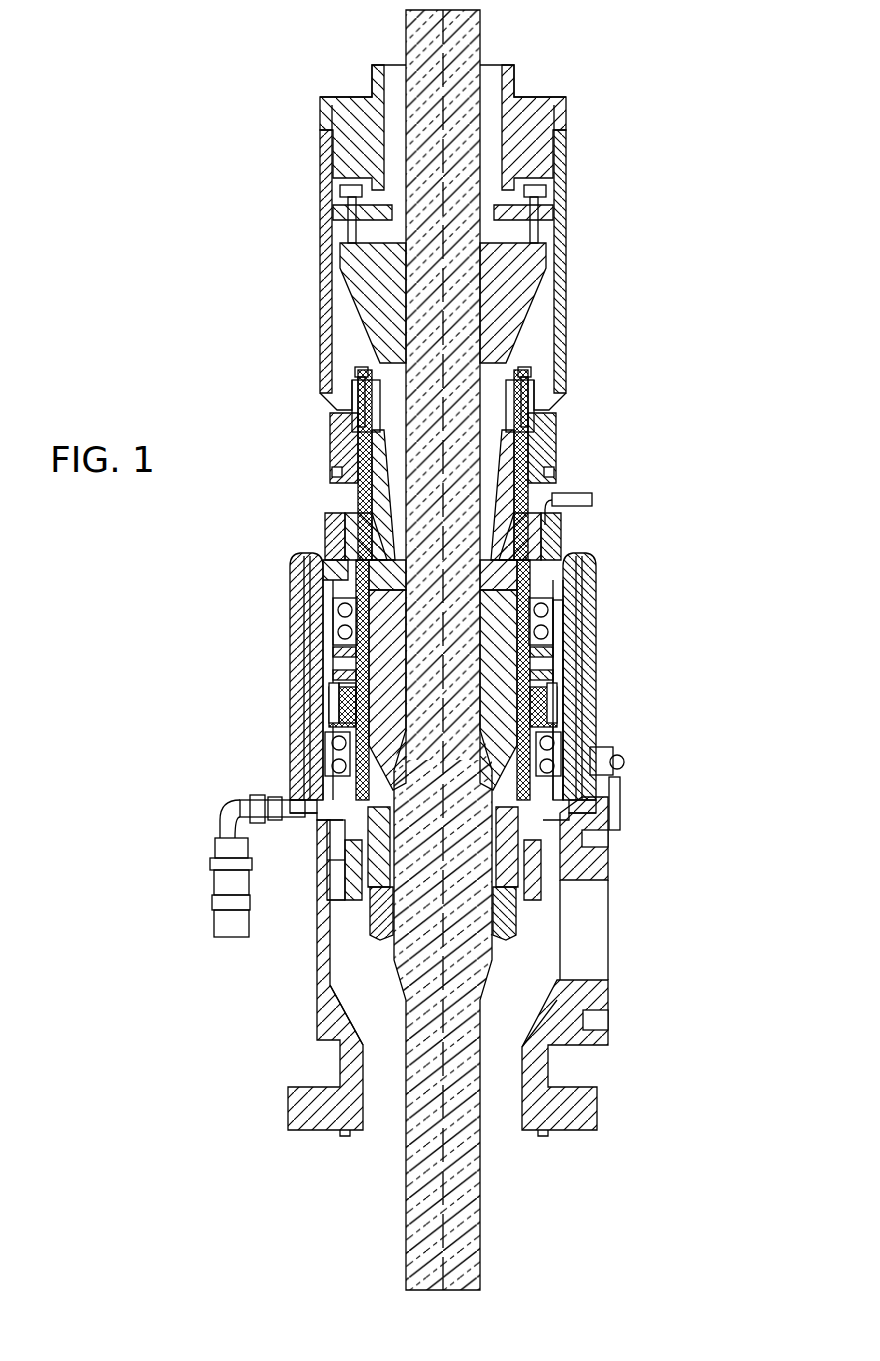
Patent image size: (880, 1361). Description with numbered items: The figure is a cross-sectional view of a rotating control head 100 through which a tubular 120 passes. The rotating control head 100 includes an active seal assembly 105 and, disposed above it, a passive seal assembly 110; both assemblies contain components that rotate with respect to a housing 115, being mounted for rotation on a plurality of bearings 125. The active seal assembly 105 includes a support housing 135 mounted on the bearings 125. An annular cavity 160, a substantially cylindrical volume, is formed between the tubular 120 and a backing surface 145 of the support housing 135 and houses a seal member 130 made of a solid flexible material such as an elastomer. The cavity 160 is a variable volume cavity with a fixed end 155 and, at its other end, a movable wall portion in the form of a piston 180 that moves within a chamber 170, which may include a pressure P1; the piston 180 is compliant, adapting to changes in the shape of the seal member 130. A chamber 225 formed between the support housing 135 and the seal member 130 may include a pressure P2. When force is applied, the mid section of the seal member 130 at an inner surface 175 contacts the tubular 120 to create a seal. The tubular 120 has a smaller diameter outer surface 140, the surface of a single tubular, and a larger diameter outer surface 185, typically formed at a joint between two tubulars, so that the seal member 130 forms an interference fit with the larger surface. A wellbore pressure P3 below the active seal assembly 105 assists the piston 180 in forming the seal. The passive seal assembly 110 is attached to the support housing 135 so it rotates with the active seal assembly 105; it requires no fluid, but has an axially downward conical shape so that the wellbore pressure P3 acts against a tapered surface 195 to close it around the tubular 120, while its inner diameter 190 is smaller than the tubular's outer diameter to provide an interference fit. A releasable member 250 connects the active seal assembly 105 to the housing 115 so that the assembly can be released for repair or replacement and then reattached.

The rotating control head 100 is at (718, 122).
The active seal assembly 105 is at (207, 629).
The passive seal assembly 110 is at (292, 228).
The housing 115 is at (585, 1113).
The tubular 120 is at (483, 22).
The plurality of bearings 125 is at (575, 612).
The seal member 130 is at (330, 668).
The support housing 135 is at (530, 690).
The smaller diameter outer surface 140 is at (481, 247).
The backing surface 145 is at (590, 727).
The fixed end 155 is at (322, 600).
The annular cavity 160 is at (330, 720).
The chamber 170 is at (345, 830).
The inner surface 175 is at (520, 658).
The piston 180 is at (335, 812).
The larger diameter outer surface 185 is at (398, 955).
The inner diameter 190 is at (408, 317).
The tapered surface 195 is at (520, 318).
The chamber 225 is at (330, 752).
The releasable member 250 is at (305, 620).
The pressure P1 is at (342, 868).
The pressure P2 is at (327, 710).
The wellbore pressure P3 is at (388, 1021).